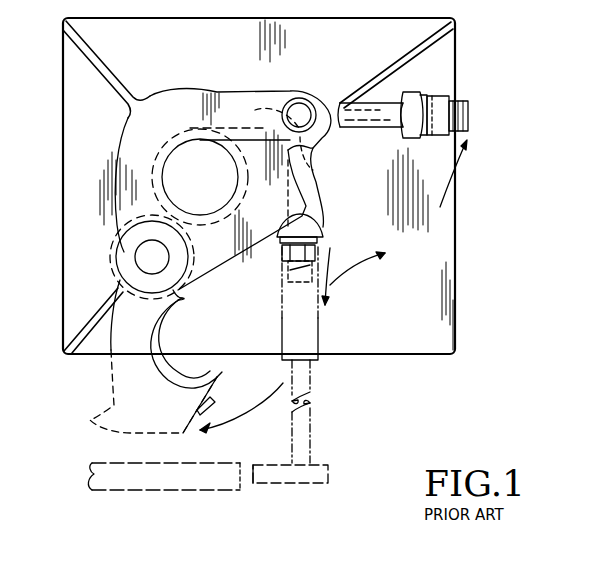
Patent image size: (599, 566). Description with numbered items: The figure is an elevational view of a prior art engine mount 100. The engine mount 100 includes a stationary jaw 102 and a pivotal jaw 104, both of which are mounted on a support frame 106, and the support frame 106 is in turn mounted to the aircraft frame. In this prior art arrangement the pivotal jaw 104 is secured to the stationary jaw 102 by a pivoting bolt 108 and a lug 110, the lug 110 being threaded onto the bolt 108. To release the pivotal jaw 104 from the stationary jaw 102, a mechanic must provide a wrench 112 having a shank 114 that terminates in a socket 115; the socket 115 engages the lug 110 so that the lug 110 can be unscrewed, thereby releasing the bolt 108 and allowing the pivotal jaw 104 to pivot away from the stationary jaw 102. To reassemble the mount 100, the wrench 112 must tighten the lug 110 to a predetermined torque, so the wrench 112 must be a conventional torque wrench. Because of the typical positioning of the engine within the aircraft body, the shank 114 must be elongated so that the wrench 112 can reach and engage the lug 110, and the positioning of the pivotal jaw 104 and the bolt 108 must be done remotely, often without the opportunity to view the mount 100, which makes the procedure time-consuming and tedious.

The engine mount 100 is at (478, 297).
The stationary jaw 102 is at (197, 92).
The pivotal jaw 104 is at (113, 377).
The support frame 106 is at (455, 265).
The pivoting bolt 108 is at (313, 158).
The lug 110 is at (318, 242).
The wrench 112 is at (201, 475).
The shank 114 is at (312, 426).
The socket 115 is at (318, 328).